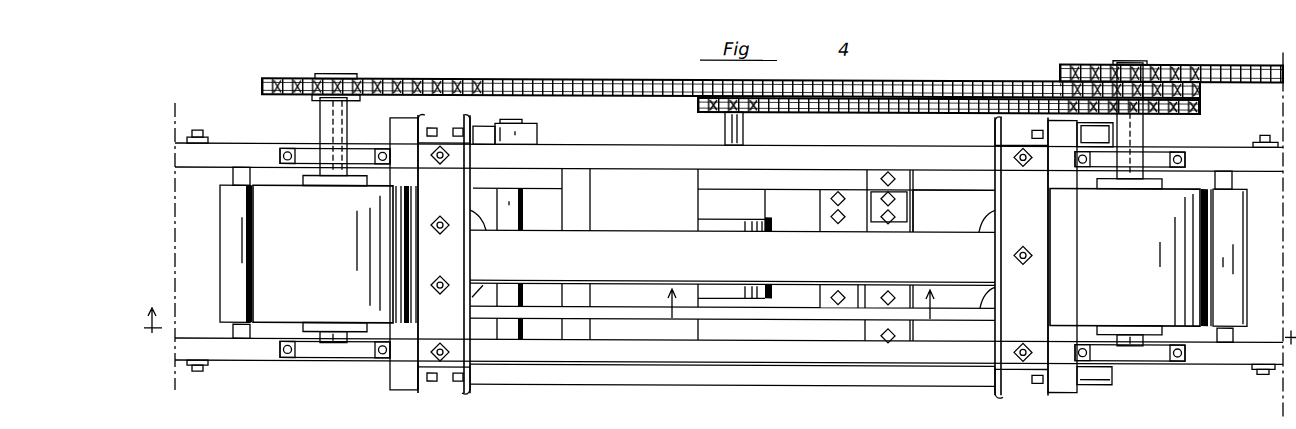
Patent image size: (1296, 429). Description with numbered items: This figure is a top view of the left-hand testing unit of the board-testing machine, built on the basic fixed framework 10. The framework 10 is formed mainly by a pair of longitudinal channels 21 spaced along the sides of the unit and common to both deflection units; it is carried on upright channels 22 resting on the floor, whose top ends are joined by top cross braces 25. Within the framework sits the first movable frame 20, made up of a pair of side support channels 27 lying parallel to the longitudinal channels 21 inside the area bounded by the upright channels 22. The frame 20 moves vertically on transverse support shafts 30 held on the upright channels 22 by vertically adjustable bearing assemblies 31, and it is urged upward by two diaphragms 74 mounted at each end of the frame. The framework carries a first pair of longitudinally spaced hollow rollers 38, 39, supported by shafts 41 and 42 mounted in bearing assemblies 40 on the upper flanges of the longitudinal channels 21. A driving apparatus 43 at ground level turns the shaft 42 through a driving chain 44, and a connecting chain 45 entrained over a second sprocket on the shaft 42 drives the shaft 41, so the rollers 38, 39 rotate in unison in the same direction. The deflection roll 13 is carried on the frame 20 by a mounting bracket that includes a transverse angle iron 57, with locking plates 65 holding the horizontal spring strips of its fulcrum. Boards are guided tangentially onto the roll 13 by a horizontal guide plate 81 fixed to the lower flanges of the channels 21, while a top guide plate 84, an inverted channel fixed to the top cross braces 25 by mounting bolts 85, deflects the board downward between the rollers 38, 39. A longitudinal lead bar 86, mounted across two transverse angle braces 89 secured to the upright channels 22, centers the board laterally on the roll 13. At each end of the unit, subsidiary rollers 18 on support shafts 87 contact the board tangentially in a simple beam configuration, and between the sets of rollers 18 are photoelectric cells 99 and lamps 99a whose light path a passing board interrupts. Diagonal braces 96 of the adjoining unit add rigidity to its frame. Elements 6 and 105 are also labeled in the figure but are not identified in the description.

The direction arrow 6 is at (685, 304).
The basic framework 10 is at (239, 138).
The deflection roll 13 is at (779, 217).
The subsidiary rollers 18 is at (222, 208).
The first movable frame 20 is at (963, 198).
The longitudinal channels 21 is at (613, 148).
The upright channels 22 is at (467, 118).
The top cross braces 25 is at (457, 200).
The side support channels 27 is at (967, 189).
The transverse support shafts 30 is at (523, 223).
The vertically adjustable bearing assemblies 31 is at (537, 129).
The roller 38 is at (277, 315).
The roller 39 is at (1140, 291).
The bearing assemblies 40 is at (366, 150).
The shaft 41 is at (322, 120).
The shaft 42 is at (1143, 136).
The driving apparatus 43 is at (742, 210).
The driving chain 44 is at (817, 110).
The connecting chain 45 is at (622, 93).
The transverse angle iron 57 is at (825, 219).
The locking plates 65 is at (873, 195).
The diaphragms 74 is at (470, 220).
The horizontal guide plate 81 is at (637, 213).
The top guide plate 84 is at (772, 265).
The mounting bolts 85 is at (441, 275).
The longitudinal lead bar 86 is at (625, 311).
The support shafts 87 is at (232, 330).
The transverse angle braces 89 is at (400, 385).
The diagonal braces 96 is at (754, 379).
The photoelectric cells 99 is at (205, 127).
The lamps 99a is at (201, 372).
The chain 105 is at (1244, 61).